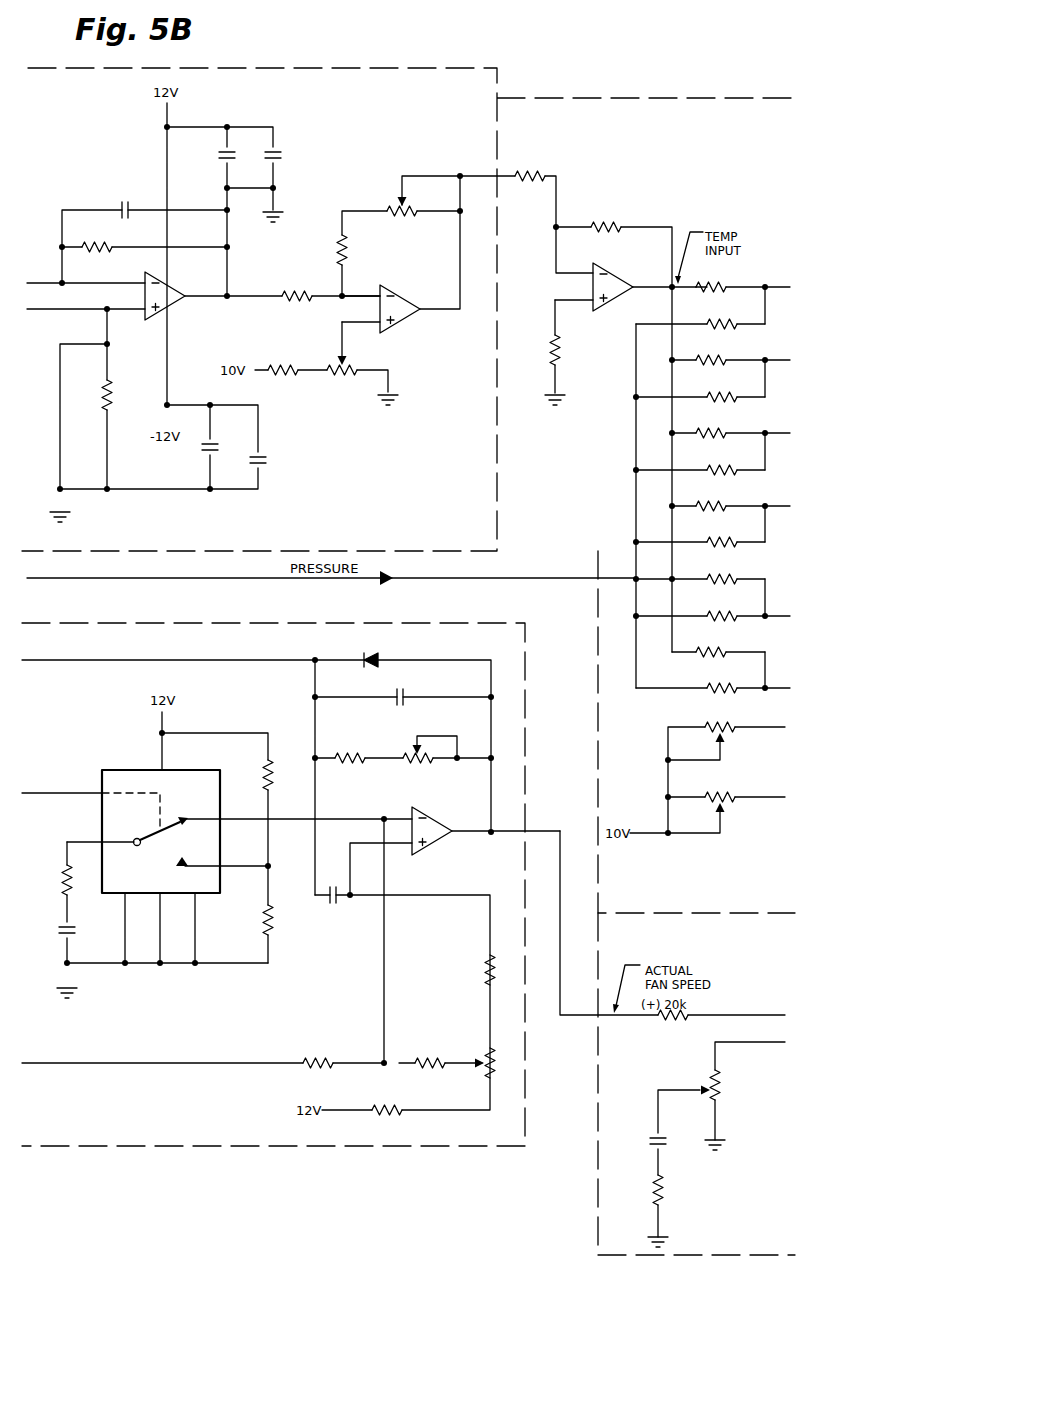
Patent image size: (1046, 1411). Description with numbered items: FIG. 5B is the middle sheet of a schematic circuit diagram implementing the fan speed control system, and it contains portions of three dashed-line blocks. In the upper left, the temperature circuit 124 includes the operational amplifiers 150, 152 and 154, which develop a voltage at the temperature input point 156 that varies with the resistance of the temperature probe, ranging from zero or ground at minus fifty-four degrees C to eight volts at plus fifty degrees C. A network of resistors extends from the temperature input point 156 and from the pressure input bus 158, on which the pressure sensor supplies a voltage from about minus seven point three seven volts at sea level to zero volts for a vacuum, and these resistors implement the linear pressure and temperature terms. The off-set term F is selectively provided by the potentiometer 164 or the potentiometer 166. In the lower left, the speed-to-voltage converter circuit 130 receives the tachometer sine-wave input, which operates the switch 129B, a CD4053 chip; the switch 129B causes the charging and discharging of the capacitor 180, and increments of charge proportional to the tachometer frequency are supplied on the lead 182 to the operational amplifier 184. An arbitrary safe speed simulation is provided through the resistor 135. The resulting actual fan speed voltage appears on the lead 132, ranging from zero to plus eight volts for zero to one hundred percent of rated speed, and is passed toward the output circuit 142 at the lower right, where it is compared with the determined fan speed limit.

The temperature circuit 124 is at (318, 66).
The switch 129B is at (108, 768).
The speed-to-voltage converter circuit 130 is at (172, 660).
The lead 132 is at (568, 1018).
The resistor 135 is at (299, 1075).
The output circuit 142 is at (597, 1170).
The operational amplifier 150 is at (175, 297).
The operational amplifier 152 is at (408, 297).
The operational amplifier 154 is at (605, 310).
The temperature input point 156 is at (669, 285).
The pressure input bus 158 is at (636, 440).
The potentiometer 164 is at (730, 737).
The potentiometer 166 is at (730, 807).
The capacitor 180 is at (72, 926).
The lead 182 is at (362, 818).
The operational amplifier 184 is at (440, 820).